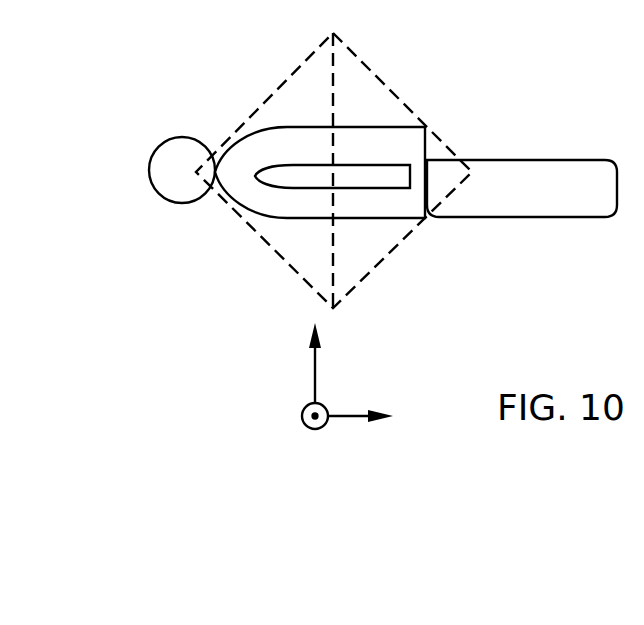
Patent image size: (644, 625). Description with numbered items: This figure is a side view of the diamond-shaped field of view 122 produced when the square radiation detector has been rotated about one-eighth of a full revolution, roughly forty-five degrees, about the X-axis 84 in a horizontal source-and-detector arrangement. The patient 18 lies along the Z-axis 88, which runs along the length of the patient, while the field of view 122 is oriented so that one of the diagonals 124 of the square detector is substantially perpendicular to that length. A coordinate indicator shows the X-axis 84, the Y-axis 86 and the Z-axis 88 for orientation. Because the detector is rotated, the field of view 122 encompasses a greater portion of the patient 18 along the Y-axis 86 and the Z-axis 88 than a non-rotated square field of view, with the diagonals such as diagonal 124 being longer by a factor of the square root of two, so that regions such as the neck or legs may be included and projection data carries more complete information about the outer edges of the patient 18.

The patient 18 is at (516, 200).
The field of view 122 is at (352, 54).
The diagonal 124 is at (333, 264).
The X-axis 84 is at (302, 415).
The Y-axis 86 is at (315, 358).
The Z-axis 88 is at (365, 420).